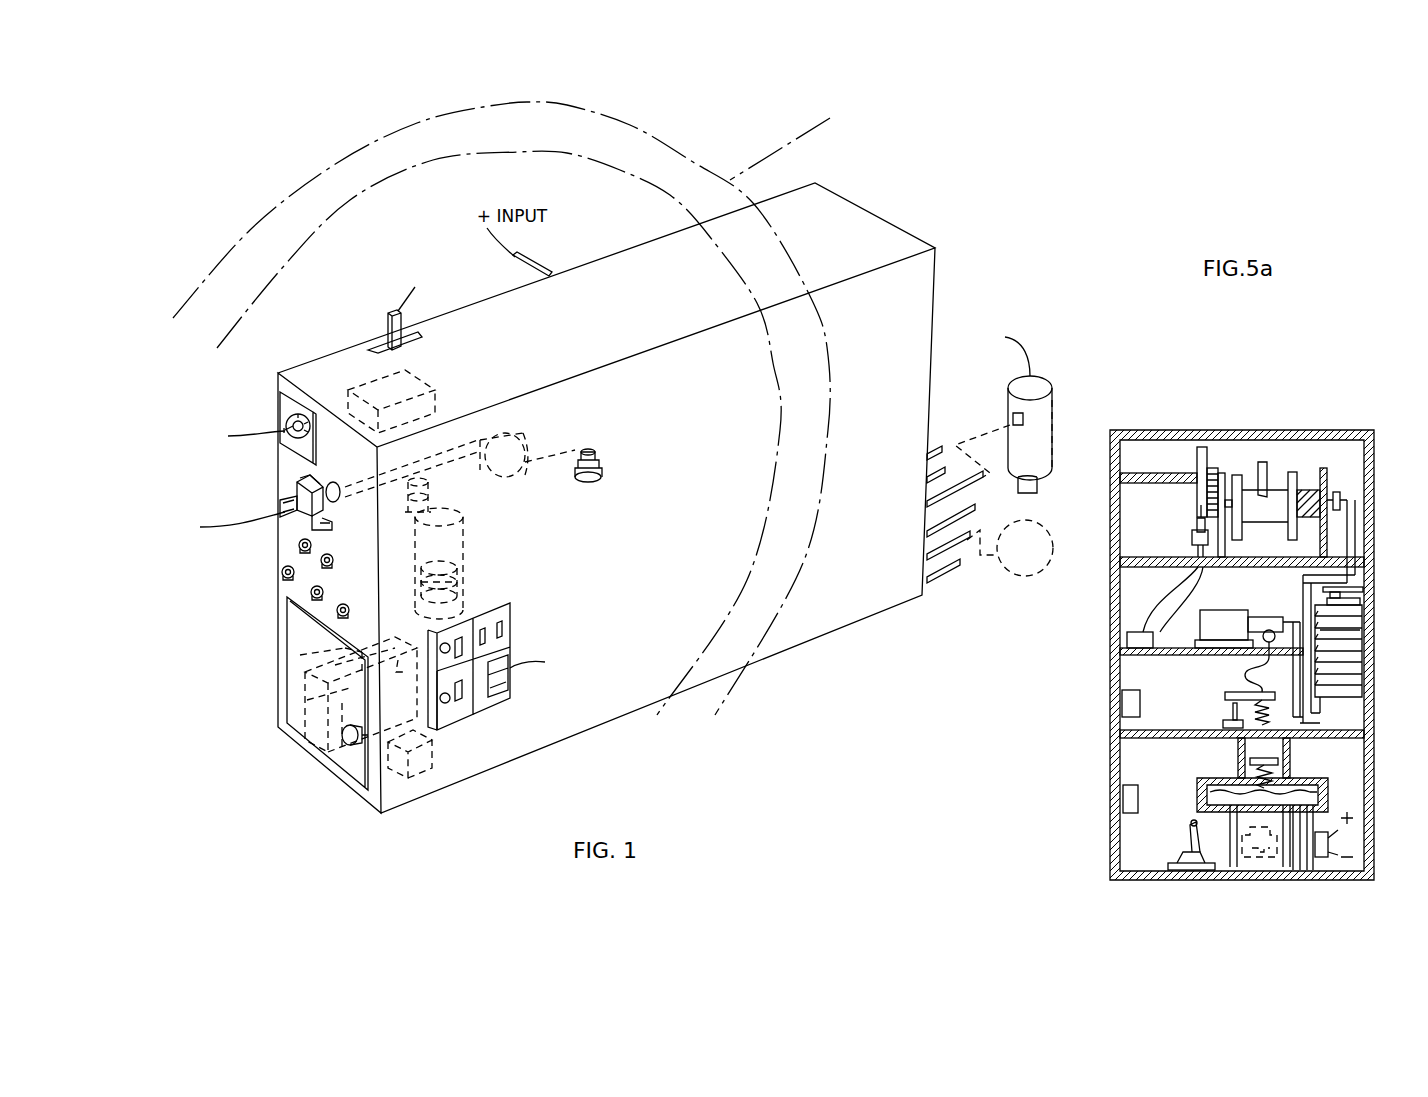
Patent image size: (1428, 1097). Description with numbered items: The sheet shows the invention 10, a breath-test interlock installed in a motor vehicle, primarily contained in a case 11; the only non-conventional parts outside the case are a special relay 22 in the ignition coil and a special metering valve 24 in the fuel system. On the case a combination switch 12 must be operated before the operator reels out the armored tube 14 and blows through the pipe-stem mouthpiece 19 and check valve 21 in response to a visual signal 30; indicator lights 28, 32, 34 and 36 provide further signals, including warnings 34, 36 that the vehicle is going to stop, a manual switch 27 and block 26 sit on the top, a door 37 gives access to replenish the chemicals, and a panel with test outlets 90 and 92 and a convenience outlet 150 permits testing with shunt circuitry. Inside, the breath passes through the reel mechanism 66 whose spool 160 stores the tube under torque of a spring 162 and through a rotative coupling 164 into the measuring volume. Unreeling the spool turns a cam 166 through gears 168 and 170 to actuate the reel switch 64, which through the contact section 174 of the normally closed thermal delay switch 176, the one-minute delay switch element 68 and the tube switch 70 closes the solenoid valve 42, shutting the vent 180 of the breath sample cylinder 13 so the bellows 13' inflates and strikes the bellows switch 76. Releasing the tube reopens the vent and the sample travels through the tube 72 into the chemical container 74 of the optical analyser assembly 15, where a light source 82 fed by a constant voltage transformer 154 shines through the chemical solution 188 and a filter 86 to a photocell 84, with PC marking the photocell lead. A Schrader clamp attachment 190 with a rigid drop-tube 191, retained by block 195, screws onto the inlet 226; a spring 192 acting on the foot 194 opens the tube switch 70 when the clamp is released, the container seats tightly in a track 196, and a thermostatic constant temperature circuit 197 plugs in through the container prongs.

In FIG. 1, the invention 10 is at (197, 271).
In FIG. 1, the case 11 is at (661, 556).
In FIG. 1, the combination switch 12 is at (281, 398).
In FIG. 1, the breath sample cylinder 13 is at (419, 563).
In FIG. 5a, the breath sample cylinder 13 is at (1368, 645).
In FIG. 1, the bellows 13' is at (473, 561).
In FIG. 5a, the bellows 13' is at (1370, 635).
In FIG. 1, the armored tube 14 is at (288, 484).
In FIG. 5a, the armored tube 14 is at (1262, 462).
In FIG. 1, the optical analyser assembly 15 is at (427, 782).
In FIG. 5a, the optical analyser assembly 15 is at (1342, 763).
In FIG. 1, the pipe-stem mouthpiece 19 is at (282, 506).
In FIG. 1, the check valve 21 is at (318, 480).
In FIG. 1, the special relay 22 is at (1010, 413).
In FIG. 1, the special metering valve 24 is at (1020, 576).
In FIG. 1, the circuit block 26 is at (347, 378).
In FIG. 1, the manual switch 27 is at (388, 319).
In FIG. 1, the indicator button 28 is at (297, 544).
In FIG. 1, the visual signal 30 is at (334, 557).
In FIG. 1, the indicator button 32 is at (341, 604).
In FIG. 1, the warning signal 34 is at (315, 600).
In FIG. 1, the warning signal 36 is at (284, 578).
In FIG. 1, the door 37 is at (360, 776).
In FIG. 5a, the solenoid valve 42 is at (1220, 617).
In FIG. 1, the reel switch 64 is at (597, 447).
In FIG. 5a, the reel switch 64 is at (1192, 538).
In FIG. 1, the reel mechanism 66 is at (520, 433).
In FIG. 5a, the reel mechanism 66 is at (1307, 415).
In FIG. 5a, the one-minute delay switch 68 is at (1118, 700).
In FIG. 1, the tube switch 70 is at (335, 665).
In FIG. 5a, the tube switch 70 is at (1235, 740).
In FIG. 1, the tube 72 is at (300, 655).
In FIG. 5a, the tube 72 is at (1265, 678).
In FIG. 1, the chemical container 74 is at (295, 700).
In FIG. 5a, the chemical container 74 is at (1283, 855).
In FIG. 1, the bellows switch 76 is at (405, 505).
In FIG. 5a, the bellows switch 76 is at (1335, 590).
In FIG. 5a, the light source 82 is at (1188, 832).
In FIG. 5a, the photocell 84 is at (1328, 860).
In FIG. 5a, the blue filter 86 is at (1297, 870).
In FIG. 1, the test outlet 90 is at (442, 660).
In FIG. 1, the test outlet 92 is at (458, 713).
In FIG. 1, the test outlet 150 is at (508, 621).
In FIG. 5a, the constant voltage transformer 154 is at (1098, 807).
In FIG. 5a, the spool 160 is at (1293, 472).
In FIG. 5a, the spring 162 is at (1308, 490).
In FIG. 5a, the rotative coupling 164 is at (1340, 494).
In FIG. 5a, the cam 166 is at (1203, 447).
In FIG. 5a, the gear 168 is at (1212, 468).
In FIG. 5a, the gear 170 is at (1197, 525).
In FIG. 5a, the contact section 174 is at (1128, 710).
In FIG. 5a, the thermal delay switch 176 is at (1115, 693).
In FIG. 5a, the vent 180 is at (1262, 655).
In FIG. 5a, the chemical solution 188 is at (1250, 762).
In FIG. 5a, the Schrader clamp attachment 190 is at (1320, 745).
In FIG. 5a, the drop-tube 191 is at (1300, 728).
In FIG. 5a, the spring 192 is at (1300, 705).
In FIG. 5a, the foot 194 is at (1225, 695).
In FIG. 5a, the block 195 is at (1257, 765).
In FIG. 5a, the track 196 is at (1325, 808).
In FIG. 5a, the thermostatic constant temperature circuit 197 is at (1245, 855).
In FIG. 5a, the inlet 226 is at (1325, 792).
In FIG. 5a, the conductor PC is at (1311, 870).